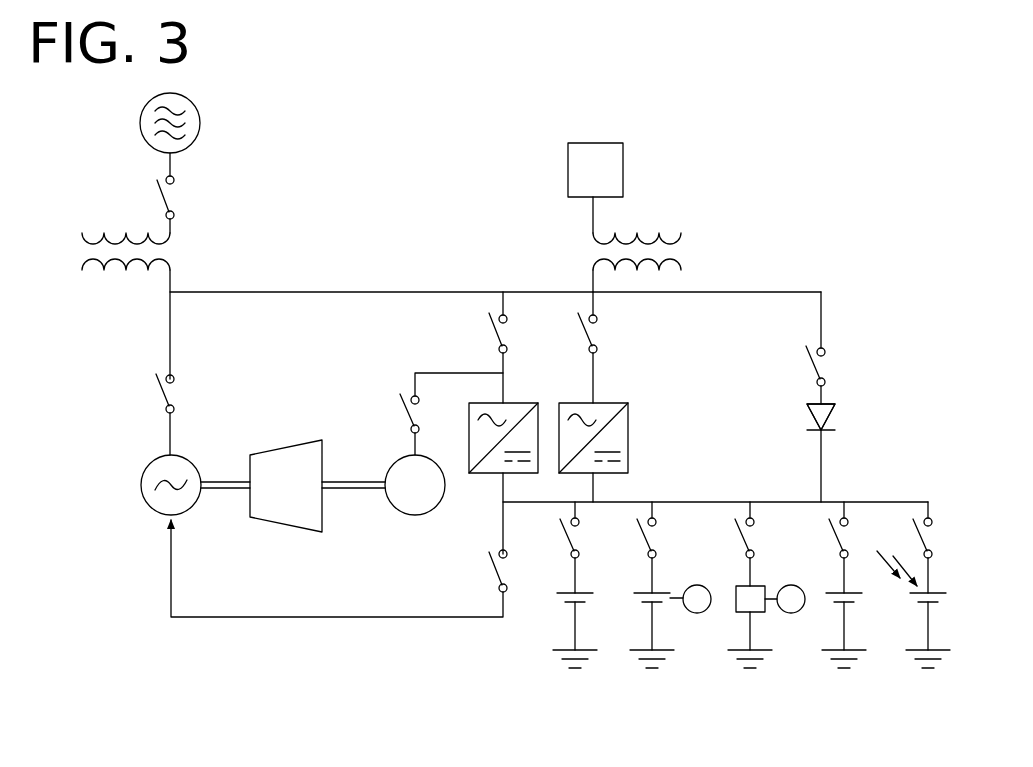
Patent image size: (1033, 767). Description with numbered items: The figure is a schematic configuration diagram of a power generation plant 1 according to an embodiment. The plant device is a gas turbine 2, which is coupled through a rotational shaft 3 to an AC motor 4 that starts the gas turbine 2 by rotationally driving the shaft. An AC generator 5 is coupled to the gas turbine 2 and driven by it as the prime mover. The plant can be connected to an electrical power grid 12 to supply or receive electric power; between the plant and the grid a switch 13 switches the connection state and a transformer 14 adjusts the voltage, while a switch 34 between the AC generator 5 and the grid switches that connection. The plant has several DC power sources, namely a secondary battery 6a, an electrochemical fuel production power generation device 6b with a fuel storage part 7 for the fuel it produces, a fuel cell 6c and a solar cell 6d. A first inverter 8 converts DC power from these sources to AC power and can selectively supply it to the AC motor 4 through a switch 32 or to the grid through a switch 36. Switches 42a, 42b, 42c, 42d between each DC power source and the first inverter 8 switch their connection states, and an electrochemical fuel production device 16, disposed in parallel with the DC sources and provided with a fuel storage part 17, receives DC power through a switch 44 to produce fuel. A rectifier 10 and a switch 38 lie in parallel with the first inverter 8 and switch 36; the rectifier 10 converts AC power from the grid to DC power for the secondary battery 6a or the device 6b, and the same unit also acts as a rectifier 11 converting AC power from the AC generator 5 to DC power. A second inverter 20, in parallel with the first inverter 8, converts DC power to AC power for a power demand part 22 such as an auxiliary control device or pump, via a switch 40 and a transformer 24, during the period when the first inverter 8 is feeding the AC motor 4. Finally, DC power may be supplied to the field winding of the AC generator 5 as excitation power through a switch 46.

The power generation plant 1 is at (846, 170).
The gas turbine 2 is at (283, 520).
The rotational shaft 3 is at (352, 492).
The AC motor 4 is at (415, 517).
The AC generator 5 is at (141, 487).
The secondary battery 6a is at (556, 667).
The electrochemical fuel production power generation device 6b is at (638, 667).
The fuel cell 6c is at (830, 667).
The solar cell 6d is at (914, 667).
The fuel storage part 7 is at (697, 613).
The first inverter 8 is at (519, 403).
The rectifier 10 is at (833, 409).
The rectifier 11 is at (821, 417).
The electrical power grid 12 is at (201, 124).
The switch 13 is at (160, 195).
The transformer 14 is at (114, 242).
The electrochemical fuel production device 16 is at (737, 667).
The fuel storage part 17 is at (791, 613).
The second inverter 20 is at (629, 440).
The power demand part 22 is at (568, 169).
The transformer 24 is at (668, 240).
The switch 32 is at (403, 412).
The switch 34 is at (161, 388).
The switch 36 is at (491, 331).
The switch 38 is at (809, 364).
The switch 40 is at (582, 333).
The switch 42a is at (570, 531).
The switch 42b is at (647, 531).
The switch 42c is at (837, 531).
The switch 42d is at (917, 534).
The switch 44 is at (744, 531).
The switch 46 is at (495, 575).